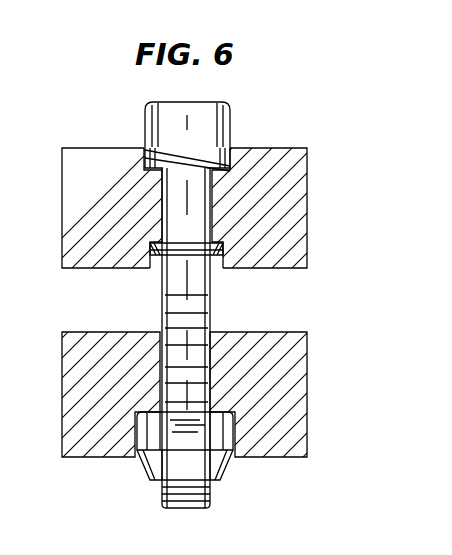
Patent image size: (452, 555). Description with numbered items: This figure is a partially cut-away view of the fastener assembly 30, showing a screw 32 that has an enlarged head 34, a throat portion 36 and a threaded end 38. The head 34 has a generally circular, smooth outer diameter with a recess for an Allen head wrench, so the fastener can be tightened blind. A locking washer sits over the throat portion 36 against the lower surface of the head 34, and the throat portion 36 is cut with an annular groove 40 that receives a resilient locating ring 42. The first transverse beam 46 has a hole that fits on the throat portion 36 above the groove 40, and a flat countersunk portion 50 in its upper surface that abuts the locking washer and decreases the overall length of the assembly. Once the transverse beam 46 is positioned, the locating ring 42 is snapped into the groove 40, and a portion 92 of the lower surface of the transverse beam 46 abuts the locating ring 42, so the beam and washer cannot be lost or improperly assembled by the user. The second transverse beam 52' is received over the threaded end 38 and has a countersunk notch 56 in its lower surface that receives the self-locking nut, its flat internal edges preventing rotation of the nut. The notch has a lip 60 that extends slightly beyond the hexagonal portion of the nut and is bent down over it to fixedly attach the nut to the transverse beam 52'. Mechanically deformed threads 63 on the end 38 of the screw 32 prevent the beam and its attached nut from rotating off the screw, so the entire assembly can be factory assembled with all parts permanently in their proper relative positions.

The fastener assembly 30 is at (240, 98).
The screw 32 is at (207, 302).
The head 34 is at (145, 104).
The throat portion 36 is at (193, 212).
The threaded end 38 is at (196, 510).
The annular groove 40 is at (182, 258).
The resilient locating ring 42 is at (212, 258).
The transverse beam 46 is at (330, 181).
The countersunk portion 50 is at (232, 132).
The transverse beam 52' is at (226, 277).
The countersunk notch 56 is at (148, 462).
The lip 60 is at (222, 470).
The mechanically deformed threads 63 is at (163, 502).
The portion of the lower surface 92 is at (147, 252).